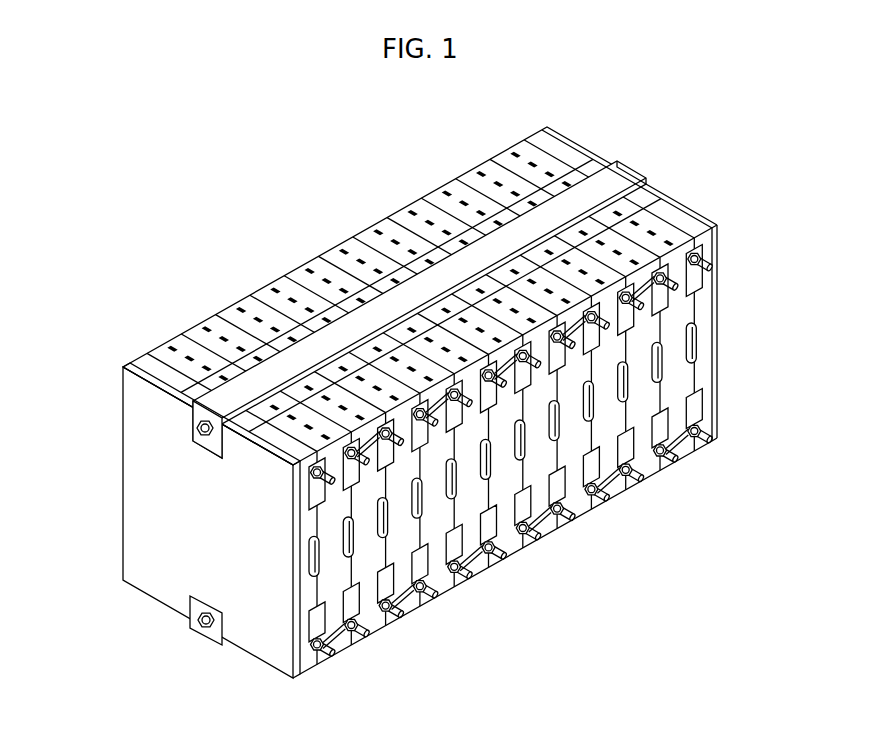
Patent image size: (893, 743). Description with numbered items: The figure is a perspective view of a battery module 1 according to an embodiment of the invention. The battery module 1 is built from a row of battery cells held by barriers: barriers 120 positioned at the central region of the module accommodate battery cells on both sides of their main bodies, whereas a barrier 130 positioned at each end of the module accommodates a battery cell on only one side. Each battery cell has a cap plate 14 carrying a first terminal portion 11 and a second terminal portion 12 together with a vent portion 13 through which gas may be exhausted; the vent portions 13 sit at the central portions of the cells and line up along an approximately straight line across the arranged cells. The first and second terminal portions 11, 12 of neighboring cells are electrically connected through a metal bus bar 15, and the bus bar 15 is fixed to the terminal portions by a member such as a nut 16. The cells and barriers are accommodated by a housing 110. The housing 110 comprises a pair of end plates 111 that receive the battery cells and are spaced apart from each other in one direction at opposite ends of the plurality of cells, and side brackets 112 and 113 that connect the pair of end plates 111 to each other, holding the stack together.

The battery module 1 is at (250, 238).
The first terminal portion 11 is at (717, 441).
The second terminal portion 12 is at (712, 268).
The vent portion 13 is at (698, 343).
The cap plate 14 is at (702, 408).
The bus bar 15 is at (340, 637).
The nut 16 is at (357, 633).
The housing 110 is at (63, 393).
The end plate 111 is at (137, 484).
The side bracket 112 is at (183, 394).
The side bracket 113 is at (188, 618).
The barrier 120 is at (400, 584).
The barrier 130 is at (305, 669).